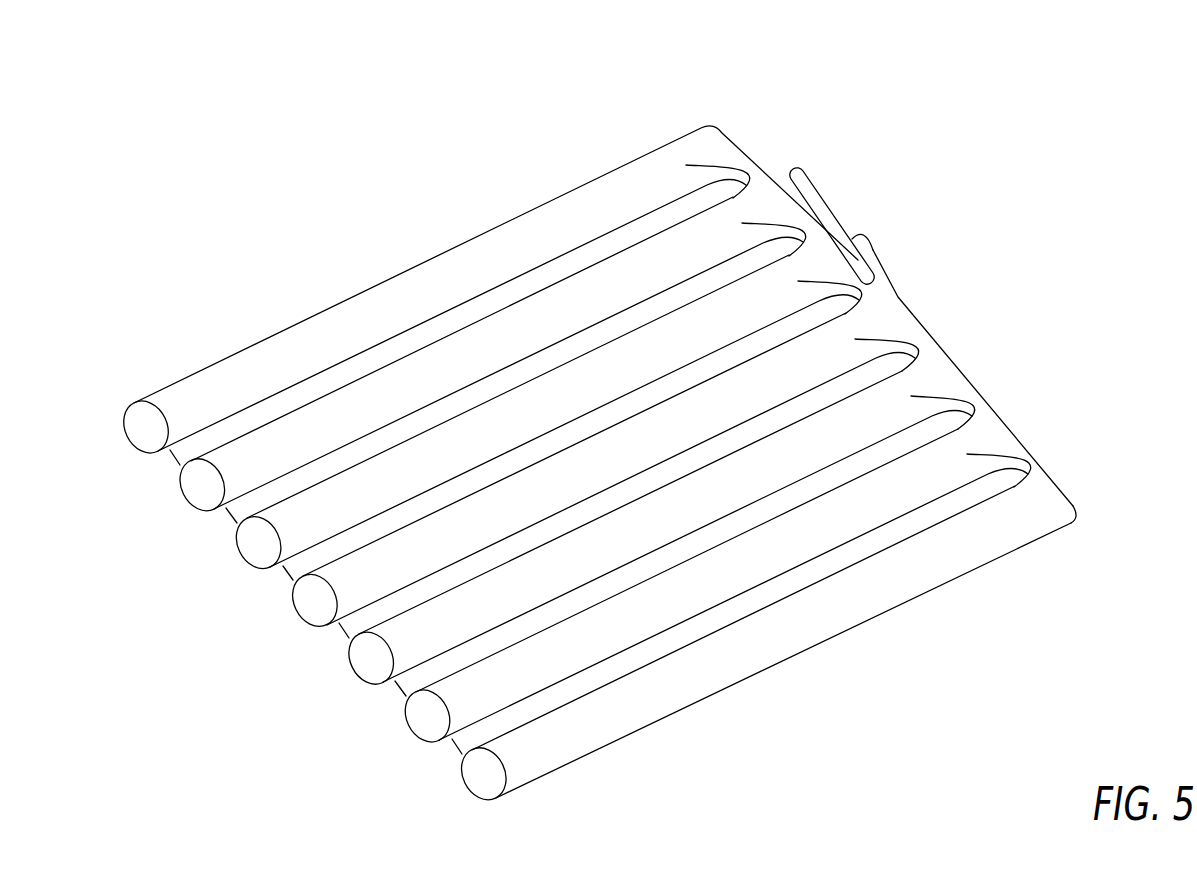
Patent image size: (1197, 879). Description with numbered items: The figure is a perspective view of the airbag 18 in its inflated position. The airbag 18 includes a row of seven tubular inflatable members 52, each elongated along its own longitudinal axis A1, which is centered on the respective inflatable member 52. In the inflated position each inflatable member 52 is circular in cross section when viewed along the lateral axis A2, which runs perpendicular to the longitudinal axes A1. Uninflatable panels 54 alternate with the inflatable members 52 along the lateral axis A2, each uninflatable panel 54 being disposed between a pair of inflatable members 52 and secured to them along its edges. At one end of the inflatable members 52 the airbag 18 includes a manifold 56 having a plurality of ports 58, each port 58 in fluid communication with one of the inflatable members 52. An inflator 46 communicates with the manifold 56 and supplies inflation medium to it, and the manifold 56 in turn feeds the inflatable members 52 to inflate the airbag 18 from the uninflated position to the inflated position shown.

The airbag 18 is at (778, 90).
The inflator 46 is at (823, 187).
The inflatable member 52 is at (247, 357).
The uninflatable panel 54 is at (172, 457).
The manifold 56 is at (884, 268).
The port 58 is at (683, 152).
The longitudinal axis A1 is at (153, 424).
The lateral axis A2 is at (405, 268).